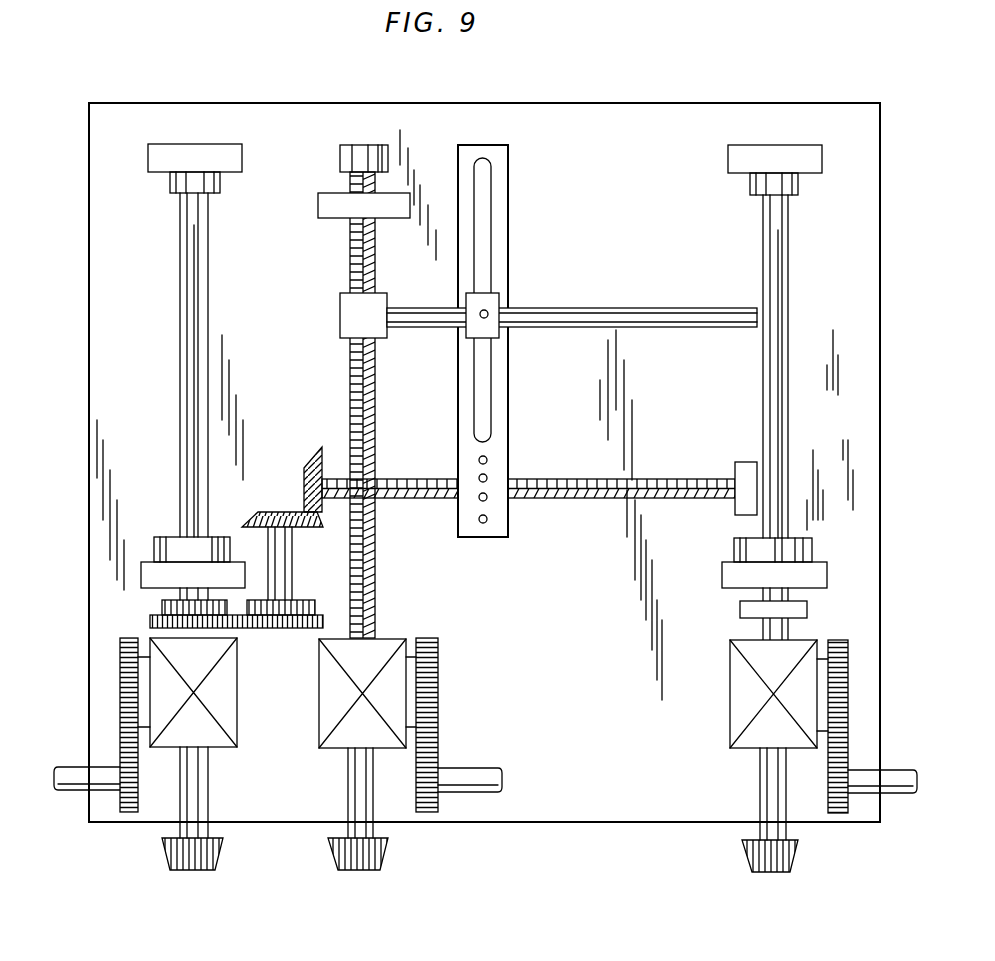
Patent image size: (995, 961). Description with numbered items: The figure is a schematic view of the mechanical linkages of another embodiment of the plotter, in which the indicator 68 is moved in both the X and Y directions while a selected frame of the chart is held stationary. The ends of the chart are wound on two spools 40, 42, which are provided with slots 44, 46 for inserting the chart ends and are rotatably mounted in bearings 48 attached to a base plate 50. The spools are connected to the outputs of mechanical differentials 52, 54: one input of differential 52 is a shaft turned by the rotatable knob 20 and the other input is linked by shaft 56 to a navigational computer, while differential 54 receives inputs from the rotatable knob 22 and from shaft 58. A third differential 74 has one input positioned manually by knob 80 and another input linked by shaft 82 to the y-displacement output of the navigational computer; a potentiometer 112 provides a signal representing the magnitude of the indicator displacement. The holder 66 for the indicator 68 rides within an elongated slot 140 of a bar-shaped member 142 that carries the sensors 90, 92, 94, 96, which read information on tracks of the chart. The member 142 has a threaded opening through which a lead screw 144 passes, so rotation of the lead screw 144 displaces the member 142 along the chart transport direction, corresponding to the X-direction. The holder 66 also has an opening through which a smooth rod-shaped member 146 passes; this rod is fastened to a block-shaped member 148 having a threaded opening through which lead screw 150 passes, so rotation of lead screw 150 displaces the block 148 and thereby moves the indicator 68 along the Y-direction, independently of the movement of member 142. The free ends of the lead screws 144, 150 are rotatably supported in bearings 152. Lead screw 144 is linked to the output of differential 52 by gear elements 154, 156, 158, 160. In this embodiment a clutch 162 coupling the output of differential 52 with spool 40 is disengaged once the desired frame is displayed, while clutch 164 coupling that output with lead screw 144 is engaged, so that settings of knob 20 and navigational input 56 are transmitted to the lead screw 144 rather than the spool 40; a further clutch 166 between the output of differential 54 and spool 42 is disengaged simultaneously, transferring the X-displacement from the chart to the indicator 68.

The rotatable knob 20 is at (195, 871).
The rotatable knob 22 is at (755, 868).
The spool 40 is at (208, 217).
The spool 42 is at (770, 220).
The slot 44 is at (190, 305).
The slot 46 is at (770, 365).
The bearings 48 is at (150, 160).
The base plate 50 is at (100, 392).
The mechanical differential 52 is at (232, 736).
The mechanical differential 54 is at (740, 683).
The shaft 56 is at (75, 792).
The shaft 58 is at (902, 794).
The holder 66 is at (492, 300).
The indicator 68 is at (481, 317).
The third differential 74 is at (386, 640).
The knob 80 is at (378, 871).
The shaft 82 is at (486, 770).
The sensor 90 is at (488, 478).
The sensor 92 is at (483, 523).
The sensor 94 is at (479, 460).
The sensor 96 is at (488, 498).
The potentiometer 112 is at (318, 206).
The elongated slot 140 is at (492, 362).
The bar-shaped member 142 is at (510, 402).
The lead screw 144 is at (690, 470).
The rod-shaped member 146 is at (690, 290).
The block-shaped member 148 is at (345, 312).
The lead screw 150 is at (376, 428).
The bearings 152 is at (352, 156).
The gear element 154 is at (306, 457).
The gear element 156 is at (256, 512).
The gear element 158 is at (277, 630).
The gear element 160 is at (152, 622).
The clutch 162 is at (166, 608).
The clutch 164 is at (302, 602).
The clutch 166 is at (742, 612).